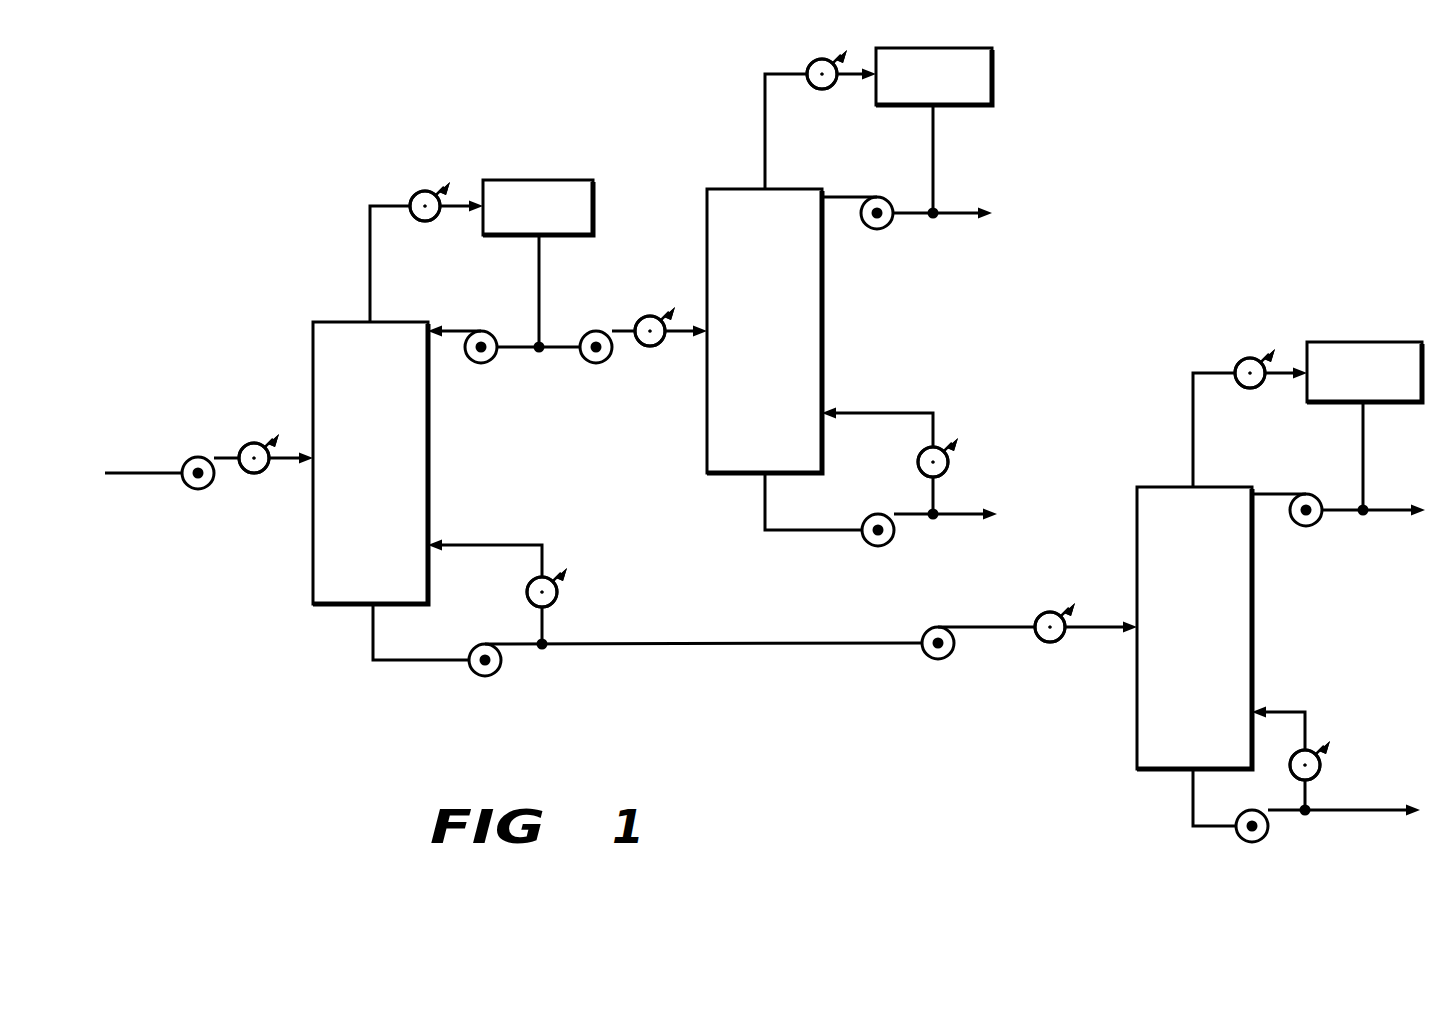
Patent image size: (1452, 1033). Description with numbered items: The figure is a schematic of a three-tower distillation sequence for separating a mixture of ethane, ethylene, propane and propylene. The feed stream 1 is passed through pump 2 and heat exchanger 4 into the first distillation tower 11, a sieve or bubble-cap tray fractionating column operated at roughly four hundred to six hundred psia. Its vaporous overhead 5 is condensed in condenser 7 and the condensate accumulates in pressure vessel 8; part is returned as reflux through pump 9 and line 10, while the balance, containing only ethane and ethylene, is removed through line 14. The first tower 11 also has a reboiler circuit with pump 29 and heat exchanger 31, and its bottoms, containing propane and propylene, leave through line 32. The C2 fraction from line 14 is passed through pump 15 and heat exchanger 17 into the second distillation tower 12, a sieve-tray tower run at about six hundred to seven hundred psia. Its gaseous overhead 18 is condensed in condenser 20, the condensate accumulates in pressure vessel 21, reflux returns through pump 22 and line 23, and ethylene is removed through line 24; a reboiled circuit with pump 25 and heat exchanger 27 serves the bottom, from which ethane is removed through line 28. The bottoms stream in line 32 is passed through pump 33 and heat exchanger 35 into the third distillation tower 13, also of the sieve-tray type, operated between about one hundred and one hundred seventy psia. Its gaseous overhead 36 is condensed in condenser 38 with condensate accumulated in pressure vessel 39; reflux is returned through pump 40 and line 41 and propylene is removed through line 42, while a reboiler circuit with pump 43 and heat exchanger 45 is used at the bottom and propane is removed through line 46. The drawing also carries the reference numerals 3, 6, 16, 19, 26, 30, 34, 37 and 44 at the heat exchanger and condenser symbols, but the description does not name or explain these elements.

The feed stream 1 is at (132, 476).
The pump 2 is at (199, 489).
The control signal to feed valve 3 is at (273, 439).
The heat exchanger 4 is at (243, 469).
The vaporous overhead 5 is at (370, 275).
The overhead control valve 6 is at (414, 217).
The condenser 7 is at (425, 195).
The pressure vessel 8 is at (546, 224).
The pump 9 is at (485, 363).
The line 10 is at (455, 325).
The first distillation tower 11 is at (380, 474).
The second distillation tower 12 is at (777, 345).
The third distillation tower 13 is at (1207, 639).
The line 14 is at (553, 350).
The pump 15 is at (590, 332).
The feed valve to ethylene fractionator 16 is at (640, 342).
The heat exchanger 17 is at (647, 322).
The gaseous overhead 18 is at (765, 150).
The overhead control valve 19 is at (811, 85).
The condenser 20 is at (810, 68).
The pressure vessel 21 is at (946, 93).
The pump 22 is at (888, 197).
The line 23 is at (836, 194).
The line 24 is at (962, 210).
The pump 25 is at (866, 544).
The bottoms recycle valve 26 is at (913, 488).
The heat exchanger 27 is at (945, 470).
The line 28 is at (970, 511).
The pump 29 is at (490, 675).
The bottoms recycle valve 30 is at (520, 614).
The heat exchanger 31 is at (553, 602).
The line 32 is at (762, 648).
The pump 33 is at (946, 658).
The feed valve to propylene fractionator 34 is at (1040, 639).
The heat exchanger 35 is at (1048, 614).
The gaseous overhead 36 is at (1193, 448).
The overhead control valve 37 is at (1240, 385).
The condenser 38 is at (1242, 362).
The pressure vessel 39 is at (1378, 387).
The pump 40 is at (1298, 525).
The line 41 is at (1272, 490).
The line 42 is at (1382, 506).
The pump 43 is at (1240, 840).
The bottoms recycle valve 44 is at (1286, 786).
The heat exchanger 45 is at (1317, 774).
The line 46 is at (1376, 806).